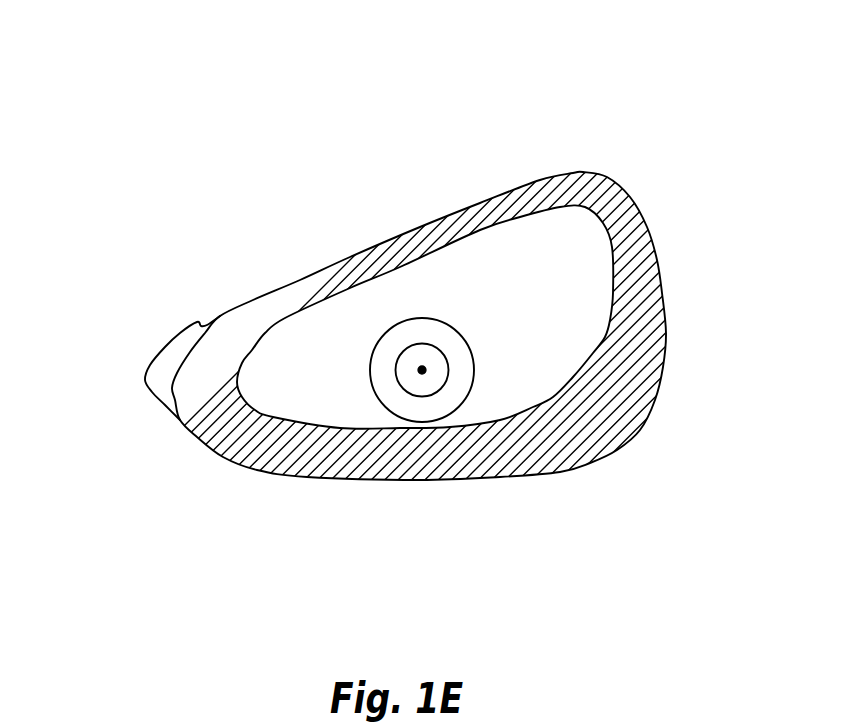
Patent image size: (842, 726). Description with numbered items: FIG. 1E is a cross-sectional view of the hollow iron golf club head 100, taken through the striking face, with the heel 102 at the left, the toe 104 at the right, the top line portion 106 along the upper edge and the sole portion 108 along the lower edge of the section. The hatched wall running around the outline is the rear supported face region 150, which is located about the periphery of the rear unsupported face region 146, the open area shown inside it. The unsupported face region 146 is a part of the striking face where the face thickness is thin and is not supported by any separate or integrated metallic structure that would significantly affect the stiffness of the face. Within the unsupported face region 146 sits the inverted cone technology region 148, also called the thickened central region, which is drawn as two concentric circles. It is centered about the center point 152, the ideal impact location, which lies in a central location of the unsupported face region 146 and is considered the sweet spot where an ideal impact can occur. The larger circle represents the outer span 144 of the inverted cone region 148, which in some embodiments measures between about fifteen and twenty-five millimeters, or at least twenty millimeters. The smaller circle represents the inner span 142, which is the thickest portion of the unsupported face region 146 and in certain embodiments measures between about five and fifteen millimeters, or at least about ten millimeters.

The golf club head 100 is at (722, 74).
The heel 102 is at (136, 431).
The toe 104 is at (693, 213).
The top line portion 106 is at (365, 173).
The sole portion 108 is at (415, 502).
The inner span 142 is at (394, 344).
The outer span 144 is at (453, 313).
The rear unsupported face region 146 is at (513, 243).
The inverted cone technology region 148 is at (412, 319).
The rear supported face region 150 is at (630, 306).
The center point 152 is at (422, 370).